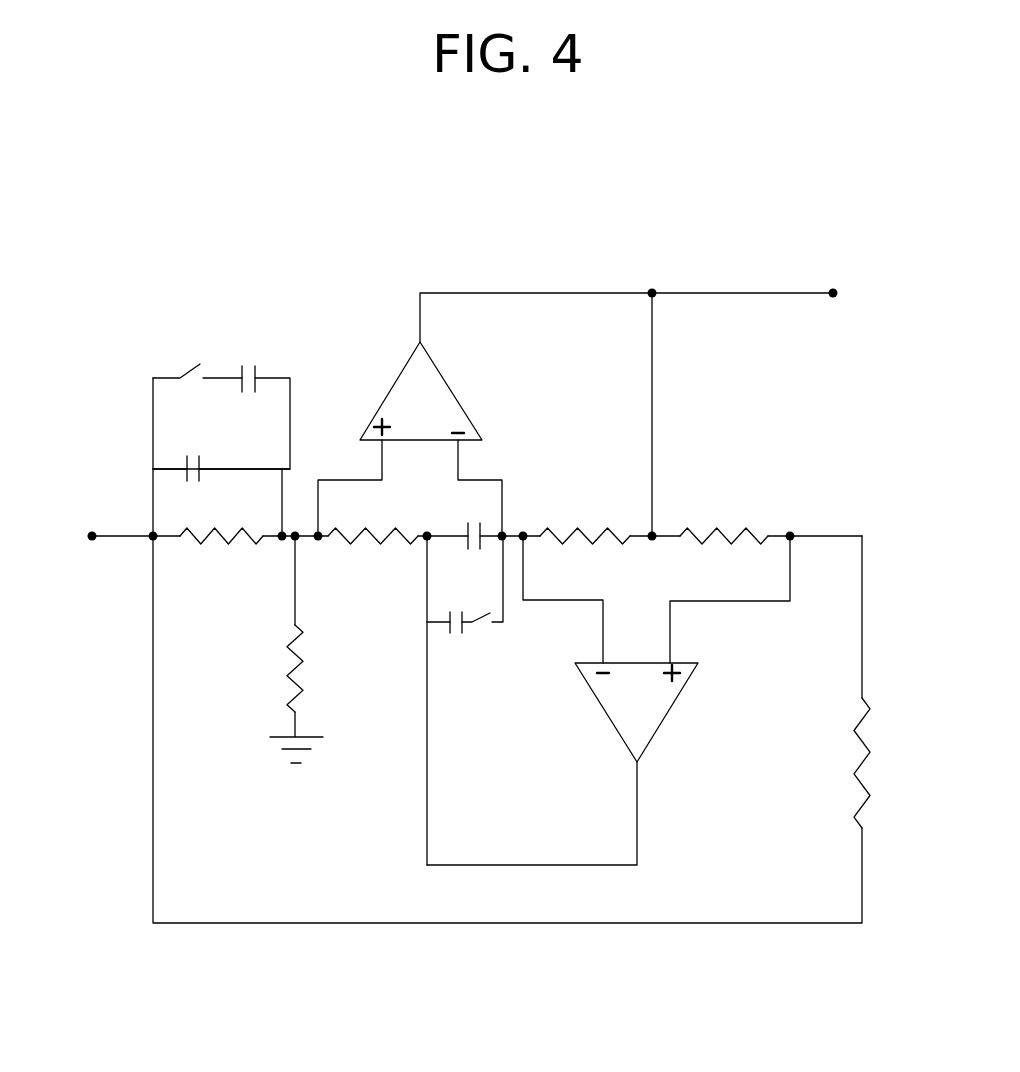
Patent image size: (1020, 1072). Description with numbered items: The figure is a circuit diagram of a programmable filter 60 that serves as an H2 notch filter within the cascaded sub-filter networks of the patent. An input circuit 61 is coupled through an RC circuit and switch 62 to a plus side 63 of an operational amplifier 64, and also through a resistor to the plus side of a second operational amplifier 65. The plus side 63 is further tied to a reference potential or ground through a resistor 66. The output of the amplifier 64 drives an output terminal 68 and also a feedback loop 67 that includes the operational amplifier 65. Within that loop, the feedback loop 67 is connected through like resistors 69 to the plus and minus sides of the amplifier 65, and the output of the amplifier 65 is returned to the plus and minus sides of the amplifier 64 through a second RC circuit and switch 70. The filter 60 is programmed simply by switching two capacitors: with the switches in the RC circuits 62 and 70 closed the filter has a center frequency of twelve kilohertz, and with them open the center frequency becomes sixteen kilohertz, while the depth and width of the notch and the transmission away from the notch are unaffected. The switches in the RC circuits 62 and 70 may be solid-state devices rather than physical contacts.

The filter 60 is at (321, 316).
The input circuit 61 is at (98, 527).
The RC circuit and switch 62 is at (302, 416).
The plus side 63 is at (346, 481).
The operational amplifier 64 is at (456, 397).
The operational amplifier 65 is at (603, 708).
The resistor 66 is at (287, 647).
The feedback loop 67 is at (654, 410).
The output terminal 68 is at (835, 297).
The like resistors 69 is at (712, 545).
The RC circuit and switch 70 is at (459, 676).